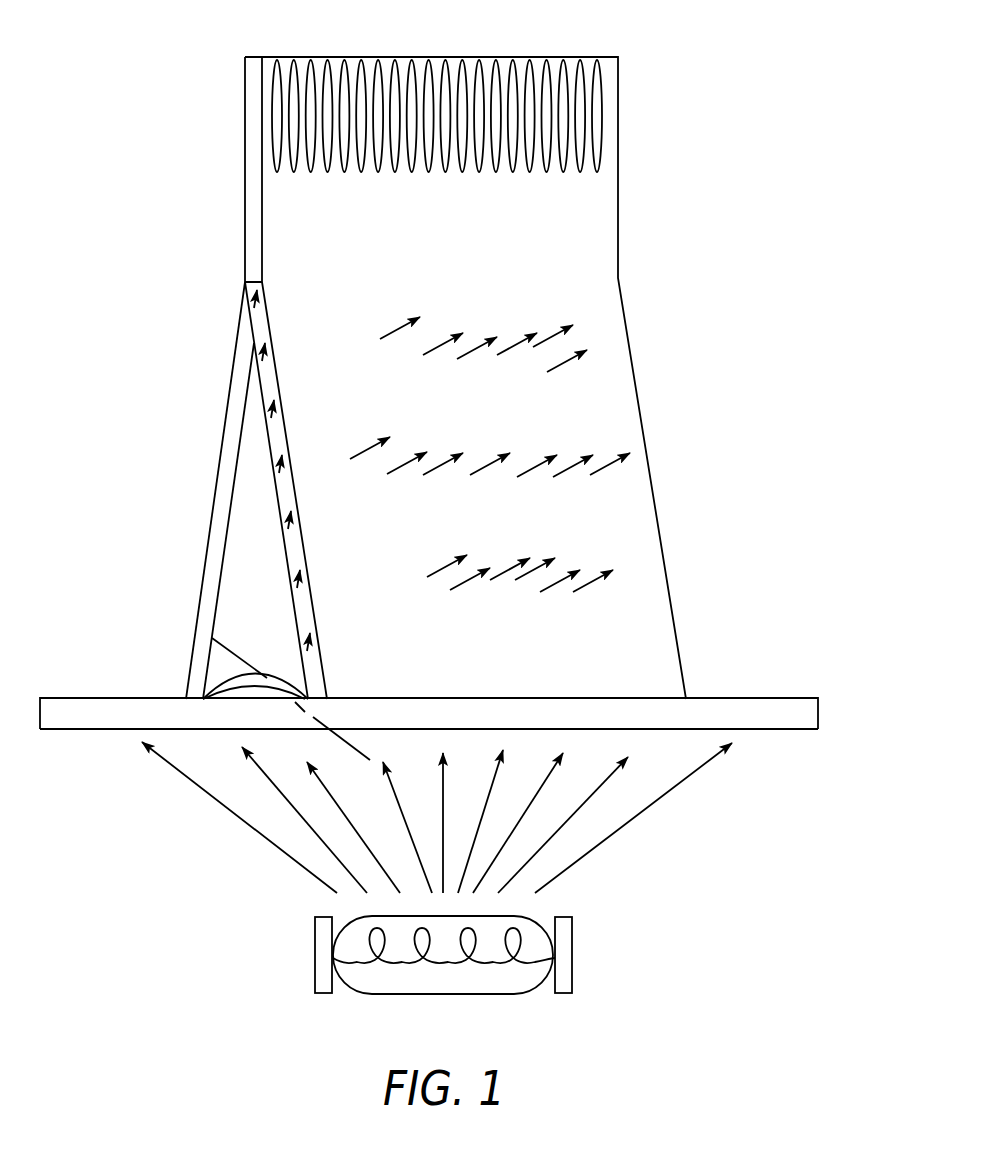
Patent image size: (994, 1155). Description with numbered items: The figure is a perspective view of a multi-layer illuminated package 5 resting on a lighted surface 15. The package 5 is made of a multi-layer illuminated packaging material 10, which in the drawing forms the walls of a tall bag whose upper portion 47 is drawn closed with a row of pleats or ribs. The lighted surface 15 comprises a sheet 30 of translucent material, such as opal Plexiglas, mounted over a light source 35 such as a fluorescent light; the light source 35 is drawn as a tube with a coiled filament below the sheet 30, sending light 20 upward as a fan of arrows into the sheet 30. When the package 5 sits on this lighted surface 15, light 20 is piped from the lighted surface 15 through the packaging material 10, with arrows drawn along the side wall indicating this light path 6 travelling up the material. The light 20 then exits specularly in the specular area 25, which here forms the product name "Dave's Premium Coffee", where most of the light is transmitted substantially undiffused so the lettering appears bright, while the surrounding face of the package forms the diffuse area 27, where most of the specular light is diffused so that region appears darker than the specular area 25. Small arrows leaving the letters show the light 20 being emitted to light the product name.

The multi-layer illuminated package 5 is at (623, 258).
The multi-layer illuminated packaging material 10 is at (253, 148).
The lighted surface 15 is at (707, 698).
The light 20 is at (245, 283).
The specular area 25 is at (343, 370).
The diffuse area 27 is at (347, 300).
The sheet 30 is at (780, 712).
The light source 35 is at (562, 958).
The top closure 47 is at (567, 215).
The light path 6 is at (212, 638).